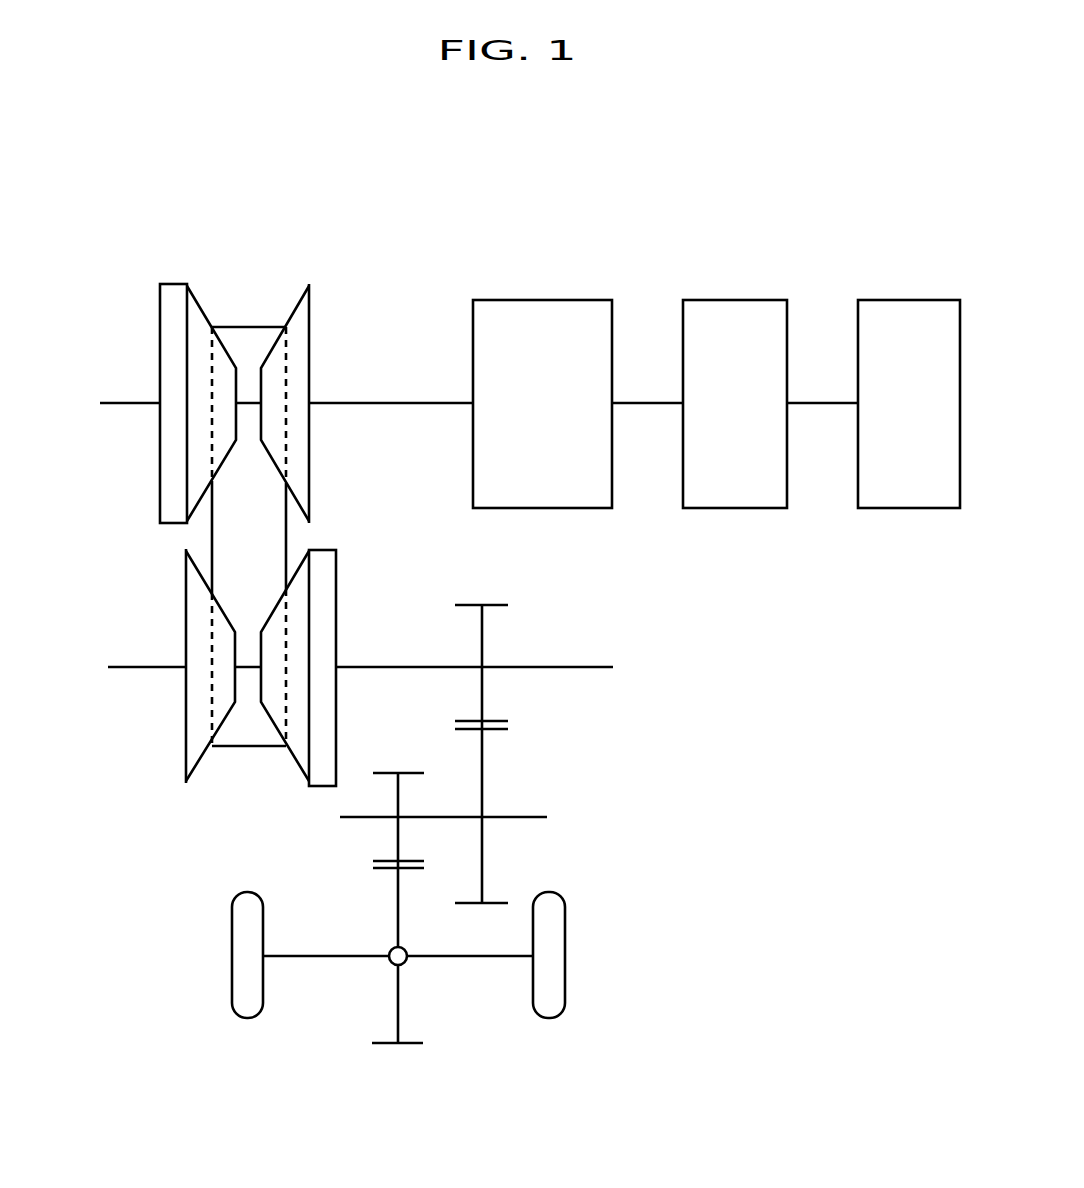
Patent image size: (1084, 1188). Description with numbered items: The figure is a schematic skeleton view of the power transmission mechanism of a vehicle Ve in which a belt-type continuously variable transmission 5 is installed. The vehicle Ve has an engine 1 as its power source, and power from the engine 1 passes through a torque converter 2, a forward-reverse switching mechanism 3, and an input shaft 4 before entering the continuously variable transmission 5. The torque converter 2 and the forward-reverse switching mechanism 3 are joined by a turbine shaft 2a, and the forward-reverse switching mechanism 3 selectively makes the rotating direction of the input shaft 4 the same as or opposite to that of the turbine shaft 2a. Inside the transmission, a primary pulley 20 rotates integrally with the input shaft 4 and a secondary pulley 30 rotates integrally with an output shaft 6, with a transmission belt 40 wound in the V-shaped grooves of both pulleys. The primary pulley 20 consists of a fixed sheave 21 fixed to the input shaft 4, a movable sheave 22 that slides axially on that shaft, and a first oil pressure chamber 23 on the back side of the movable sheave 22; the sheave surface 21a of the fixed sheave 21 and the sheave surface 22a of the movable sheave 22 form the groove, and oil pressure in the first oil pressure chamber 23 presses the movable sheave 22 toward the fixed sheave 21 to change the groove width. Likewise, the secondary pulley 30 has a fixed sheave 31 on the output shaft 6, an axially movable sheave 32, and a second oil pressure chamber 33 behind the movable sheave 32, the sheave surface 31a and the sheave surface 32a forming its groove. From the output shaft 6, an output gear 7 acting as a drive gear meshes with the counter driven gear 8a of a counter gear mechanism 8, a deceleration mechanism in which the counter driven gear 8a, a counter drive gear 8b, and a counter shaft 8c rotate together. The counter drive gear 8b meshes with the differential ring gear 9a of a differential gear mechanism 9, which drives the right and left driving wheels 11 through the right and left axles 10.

The engine 1 is at (900, 300).
The torque converter 2 is at (725, 300).
The turbine shaft 2a is at (640, 403).
The forward-reverse switching mechanism 3 is at (572, 300).
The input shaft 4 is at (426, 403).
The continuously variable transmission 5 is at (262, 194).
The output shaft 6 is at (358, 667).
The output gear 7 is at (490, 605).
The counter gear mechanism 8 is at (514, 764).
The counter driven gear 8a is at (518, 728).
The counter drive gear 8b is at (407, 836).
The counter shaft 8c is at (490, 817).
The differential gear mechanism 9 is at (437, 1054).
The differential ring gear 9a is at (398, 888).
The axles 10 is at (330, 956).
The driving wheels 11 is at (248, 1018).
The primary pulley 20 is at (214, 341).
The fixed sheave 21 is at (325, 341).
The sheave surface 21a is at (296, 306).
The movable sheave 22 is at (227, 358).
The sheave surface 22a is at (203, 306).
The first oil pressure chamber 23 is at (178, 284).
The secondary pulley 30 is at (213, 676).
The fixed sheave 31 is at (145, 711).
The sheave surface 31a is at (190, 783).
The movable sheave 32 is at (258, 713).
The sheave surface 32a is at (295, 762).
The second oil pressure chamber 33 is at (326, 549).
The transmission belt 40 is at (208, 540).
The vehicle Ve is at (820, 199).